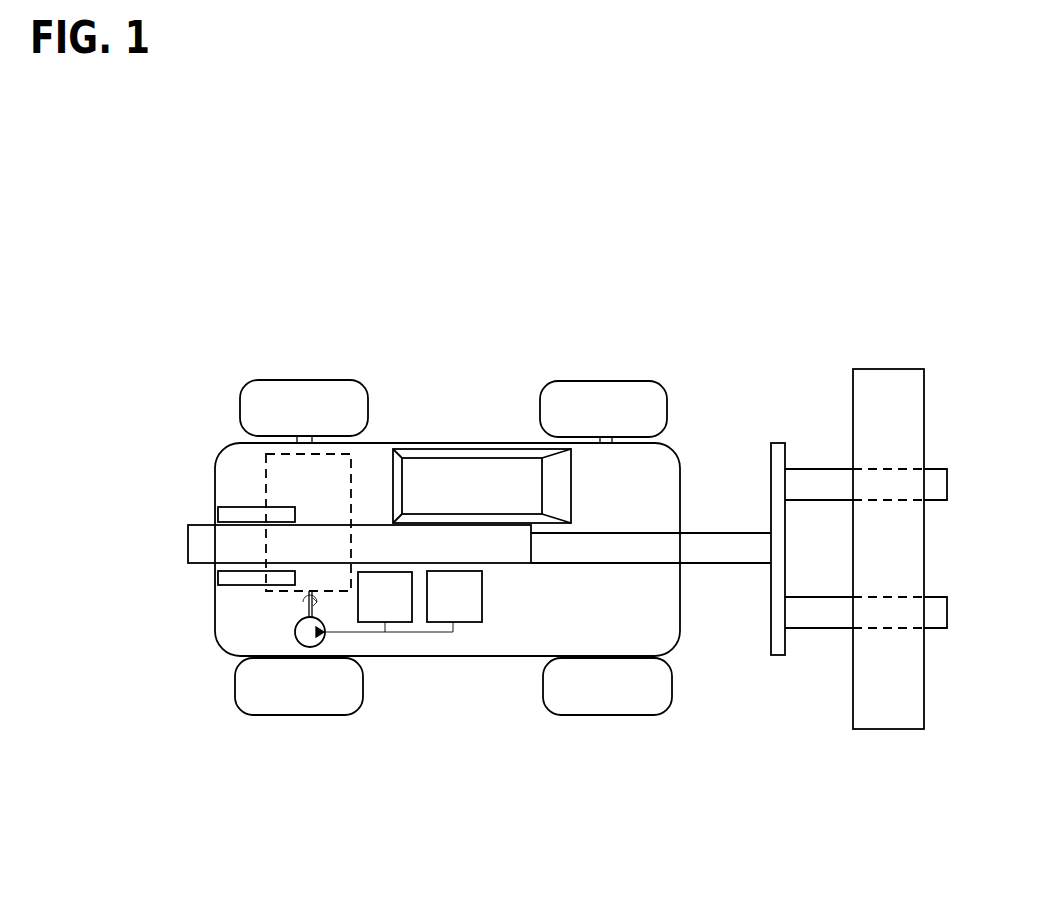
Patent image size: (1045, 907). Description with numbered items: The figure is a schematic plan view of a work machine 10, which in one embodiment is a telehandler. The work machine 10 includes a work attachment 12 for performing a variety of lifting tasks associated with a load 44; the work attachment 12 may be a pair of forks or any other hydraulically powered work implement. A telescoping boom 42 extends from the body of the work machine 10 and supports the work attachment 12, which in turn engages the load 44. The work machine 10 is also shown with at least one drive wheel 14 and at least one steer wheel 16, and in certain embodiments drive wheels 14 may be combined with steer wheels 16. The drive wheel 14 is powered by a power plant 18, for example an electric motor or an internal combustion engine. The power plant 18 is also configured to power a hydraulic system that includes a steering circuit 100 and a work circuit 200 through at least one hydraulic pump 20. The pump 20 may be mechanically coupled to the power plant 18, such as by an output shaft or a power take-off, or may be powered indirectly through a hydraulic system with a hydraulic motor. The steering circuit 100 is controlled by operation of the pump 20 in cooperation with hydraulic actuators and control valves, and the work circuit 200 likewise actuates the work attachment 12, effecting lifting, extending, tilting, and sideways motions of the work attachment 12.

The work machine 10 is at (214, 300).
The work attachment 12 is at (771, 443).
The drive wheel 14 is at (251, 380).
The steer wheel 16 is at (548, 381).
The power plant 18 is at (266, 470).
The hydraulic pump 20 is at (295, 636).
The telescoping boom 42 is at (686, 565).
The load 44 is at (877, 729).
The steering circuit 100 is at (454, 596).
The work circuit 200 is at (385, 597).